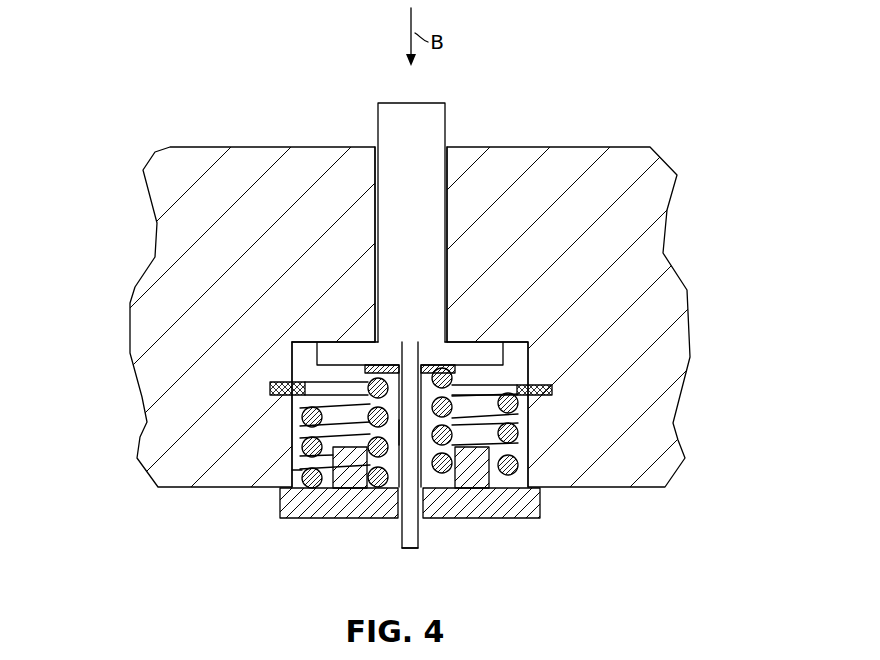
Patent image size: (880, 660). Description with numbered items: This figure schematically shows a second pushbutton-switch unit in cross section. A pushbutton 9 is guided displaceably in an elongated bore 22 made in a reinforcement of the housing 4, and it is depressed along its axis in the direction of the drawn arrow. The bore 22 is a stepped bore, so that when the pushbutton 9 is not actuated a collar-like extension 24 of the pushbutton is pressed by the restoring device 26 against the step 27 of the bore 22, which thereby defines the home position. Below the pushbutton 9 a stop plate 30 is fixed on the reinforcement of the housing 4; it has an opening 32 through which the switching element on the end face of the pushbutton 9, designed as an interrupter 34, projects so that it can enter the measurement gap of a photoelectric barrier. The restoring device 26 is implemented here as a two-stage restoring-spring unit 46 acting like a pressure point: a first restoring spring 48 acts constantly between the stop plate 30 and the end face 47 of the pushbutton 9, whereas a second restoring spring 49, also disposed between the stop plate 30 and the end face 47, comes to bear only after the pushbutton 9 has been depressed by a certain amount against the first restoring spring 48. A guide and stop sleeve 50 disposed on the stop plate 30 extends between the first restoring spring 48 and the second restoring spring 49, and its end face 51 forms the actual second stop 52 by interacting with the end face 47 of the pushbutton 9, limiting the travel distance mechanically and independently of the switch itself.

The housing 4 is at (545, 184).
The pushbutton 9 is at (418, 147).
The elongated bore 22 is at (378, 166).
The collar-like extension 24 is at (530, 346).
The restoring device 26 is at (522, 419).
The step 27 is at (333, 342).
The stop plate 30 is at (293, 510).
The opening 32 is at (400, 518).
The interrupter 34 is at (413, 535).
The two-stage restoring-spring unit 46 is at (284, 417).
The end face 47 is at (333, 368).
The first restoring spring 48 is at (474, 364).
The second restoring spring 49 is at (535, 400).
The guide and stop sleeve 50 is at (472, 455).
The end face 51 is at (350, 441).
The second stop 52 is at (340, 474).